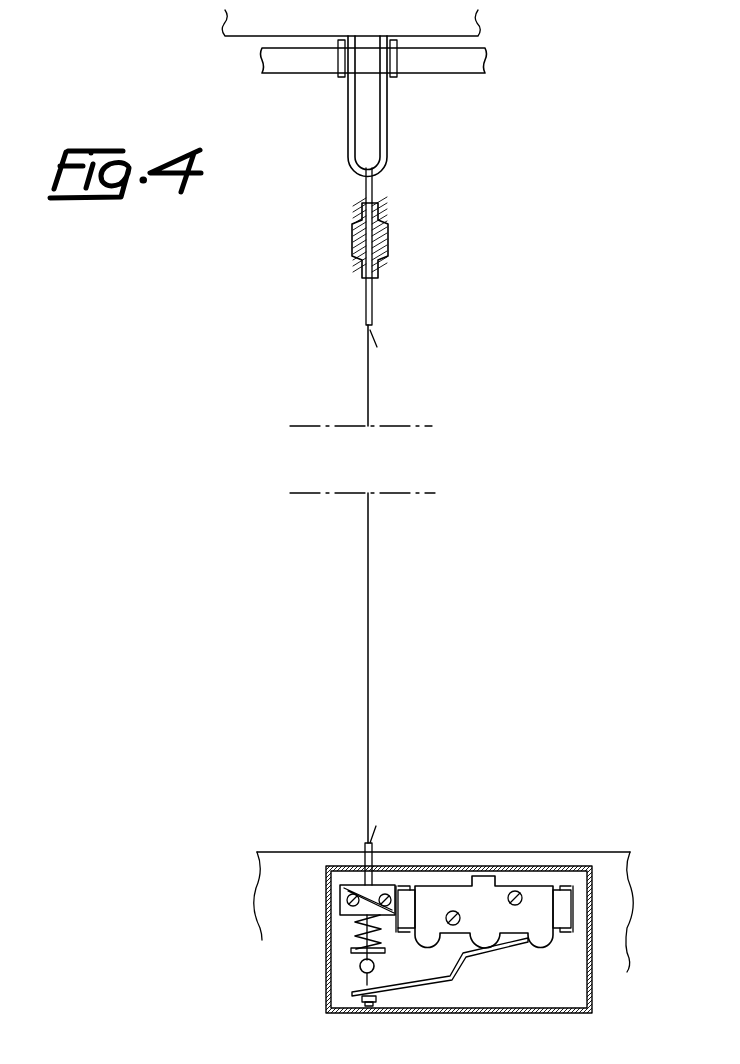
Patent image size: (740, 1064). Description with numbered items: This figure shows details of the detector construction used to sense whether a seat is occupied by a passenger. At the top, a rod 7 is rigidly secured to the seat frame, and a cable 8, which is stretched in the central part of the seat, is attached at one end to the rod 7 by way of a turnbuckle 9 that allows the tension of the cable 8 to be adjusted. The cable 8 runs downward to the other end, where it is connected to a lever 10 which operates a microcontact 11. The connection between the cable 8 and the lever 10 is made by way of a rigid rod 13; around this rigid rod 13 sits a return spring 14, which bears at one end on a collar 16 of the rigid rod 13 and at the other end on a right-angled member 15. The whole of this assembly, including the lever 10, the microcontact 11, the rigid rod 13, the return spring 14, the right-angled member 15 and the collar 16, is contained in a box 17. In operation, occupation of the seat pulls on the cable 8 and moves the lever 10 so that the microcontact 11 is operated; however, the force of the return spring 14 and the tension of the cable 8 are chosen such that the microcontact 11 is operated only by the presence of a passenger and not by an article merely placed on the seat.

The rod 7 is at (452, 66).
The cable 8 is at (368, 390).
The turnbuckle 9 is at (388, 243).
The lever 10 is at (462, 966).
The microcontact 11 is at (485, 897).
The rigid rod 13 is at (361, 968).
The return spring 14 is at (352, 922).
The right-angled member 15 is at (340, 893).
The collar 16 is at (355, 955).
The box 17 is at (593, 962).